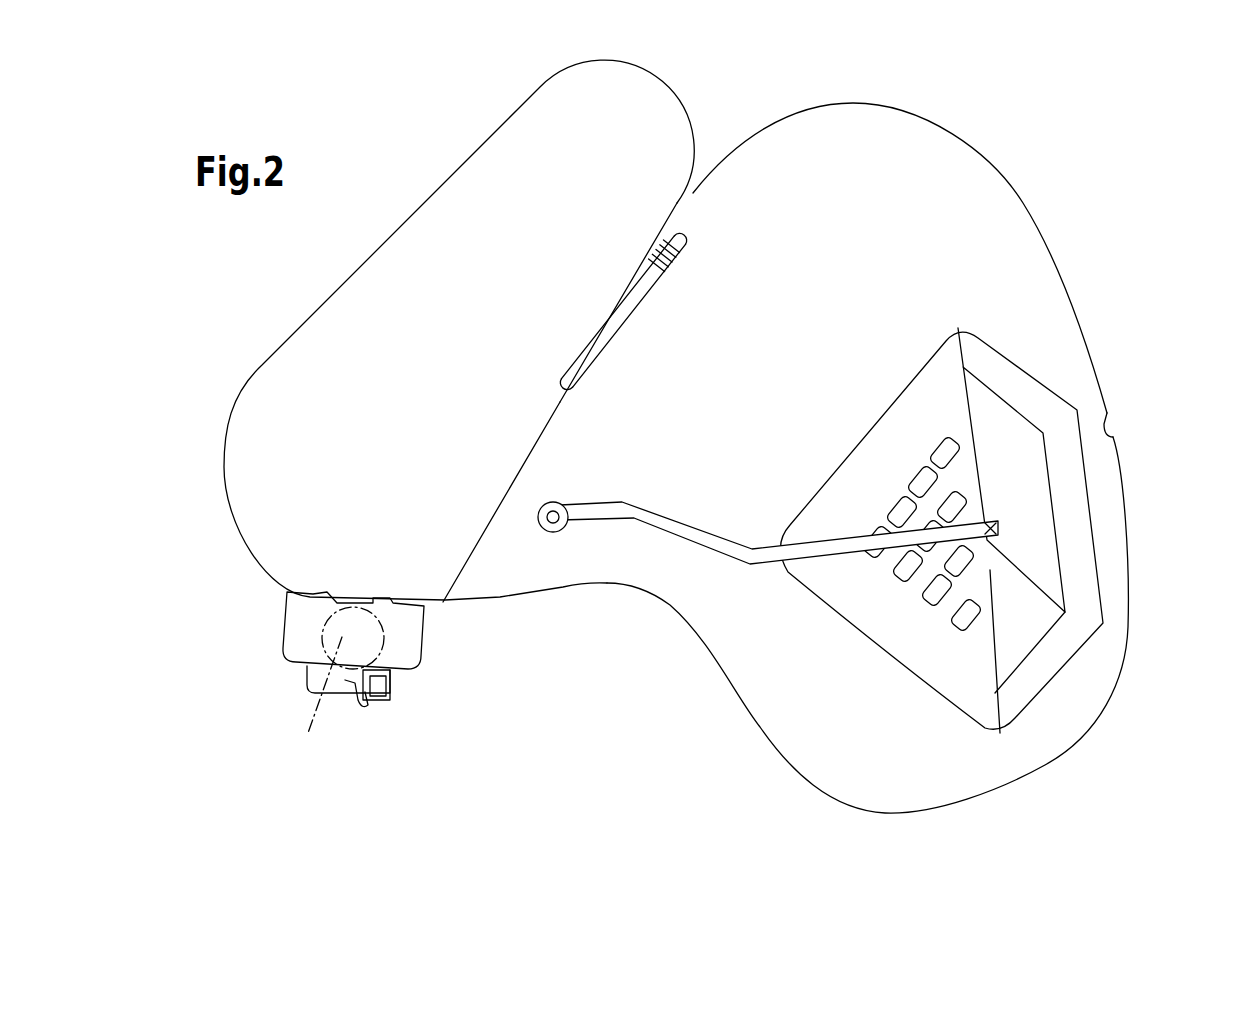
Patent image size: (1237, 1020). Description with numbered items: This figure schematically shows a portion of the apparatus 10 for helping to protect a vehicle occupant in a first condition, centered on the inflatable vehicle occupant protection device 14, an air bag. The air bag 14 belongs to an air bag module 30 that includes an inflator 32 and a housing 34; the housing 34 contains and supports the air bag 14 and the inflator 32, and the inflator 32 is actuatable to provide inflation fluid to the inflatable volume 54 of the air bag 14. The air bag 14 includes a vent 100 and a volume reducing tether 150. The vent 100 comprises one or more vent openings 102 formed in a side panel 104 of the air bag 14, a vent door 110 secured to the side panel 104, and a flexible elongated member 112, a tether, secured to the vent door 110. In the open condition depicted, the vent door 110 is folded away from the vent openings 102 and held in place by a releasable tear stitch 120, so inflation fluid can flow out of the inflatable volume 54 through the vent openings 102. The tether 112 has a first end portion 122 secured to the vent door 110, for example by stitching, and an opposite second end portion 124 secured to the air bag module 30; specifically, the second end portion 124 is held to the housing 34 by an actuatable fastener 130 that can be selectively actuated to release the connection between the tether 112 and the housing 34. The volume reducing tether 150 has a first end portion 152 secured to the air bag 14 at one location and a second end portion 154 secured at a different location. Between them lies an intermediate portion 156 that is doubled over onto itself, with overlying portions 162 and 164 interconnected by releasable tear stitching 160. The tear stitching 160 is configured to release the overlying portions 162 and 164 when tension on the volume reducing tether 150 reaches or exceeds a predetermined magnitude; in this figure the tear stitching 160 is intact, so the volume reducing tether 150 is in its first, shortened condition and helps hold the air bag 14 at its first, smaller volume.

The apparatus 10 is at (403, 122).
The inflatable vehicle occupant protection device 14 is at (543, 117).
The air bag module 30 is at (262, 651).
The inflator 32 is at (337, 687).
The housing 34 is at (423, 640).
The inflatable volume 54 is at (658, 381).
The vent 100 is at (1040, 322).
The vent openings 102 is at (963, 560).
The side panel 104 is at (743, 663).
The vent door 110 is at (990, 570).
The flexible elongated member 112 is at (673, 523).
The releasable tear stitch 120 is at (1040, 530).
The first end portion 122 is at (1022, 600).
The second end portion 124 is at (568, 522).
The actuatable fastener 130 is at (383, 690).
The volume reducing tether 150 is at (579, 357).
The first end portion 152 is at (678, 205).
The second end portion 154 is at (458, 570).
The intermediate portion 156 is at (593, 383).
The releasable tear stitching 160 is at (652, 243).
The overlying portion 162 is at (612, 308).
The overlying portion 164 is at (644, 288).